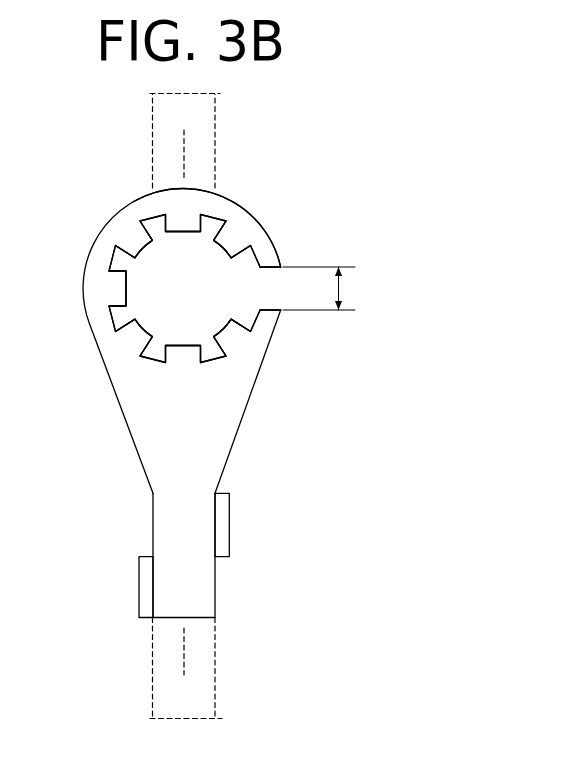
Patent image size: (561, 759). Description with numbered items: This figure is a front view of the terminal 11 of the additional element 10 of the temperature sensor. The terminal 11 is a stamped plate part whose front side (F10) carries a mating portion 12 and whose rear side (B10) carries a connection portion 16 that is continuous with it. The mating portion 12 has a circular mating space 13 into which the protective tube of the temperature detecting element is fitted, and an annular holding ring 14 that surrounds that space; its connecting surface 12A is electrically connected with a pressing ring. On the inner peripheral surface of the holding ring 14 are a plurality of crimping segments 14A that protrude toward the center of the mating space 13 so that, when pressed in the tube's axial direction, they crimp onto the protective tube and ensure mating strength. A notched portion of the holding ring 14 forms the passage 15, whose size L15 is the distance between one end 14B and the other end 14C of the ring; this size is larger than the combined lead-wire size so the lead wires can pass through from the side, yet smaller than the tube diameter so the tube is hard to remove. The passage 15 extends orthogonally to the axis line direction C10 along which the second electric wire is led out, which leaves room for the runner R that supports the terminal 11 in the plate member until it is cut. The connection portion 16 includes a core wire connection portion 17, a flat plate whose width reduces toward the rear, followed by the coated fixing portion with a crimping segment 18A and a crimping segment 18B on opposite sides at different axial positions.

The additional element 10 is at (282, 176).
The terminal 11 is at (275, 240).
The mating portion 12 is at (121, 208).
The connecting surface 12A is at (164, 205).
The mating space 13 is at (197, 328).
The holding ring 14 is at (99, 234).
The crimping segments 14A is at (185, 240).
The one end of the holding ring 14B is at (267, 269).
The other end of the holding ring 14C is at (267, 309).
The passage 15 is at (270, 288).
The connection portion 16 is at (143, 478).
The core wire connection portion 17 is at (164, 427).
The crimping segment 18A is at (232, 511).
The crimping segment 18B is at (140, 567).
The runner R is at (217, 124).
The axis line direction C10 is at (184, 667).
The front side F10 is at (124, 128).
The rear side B10 is at (123, 642).
The size of the passage L15 is at (339, 289).